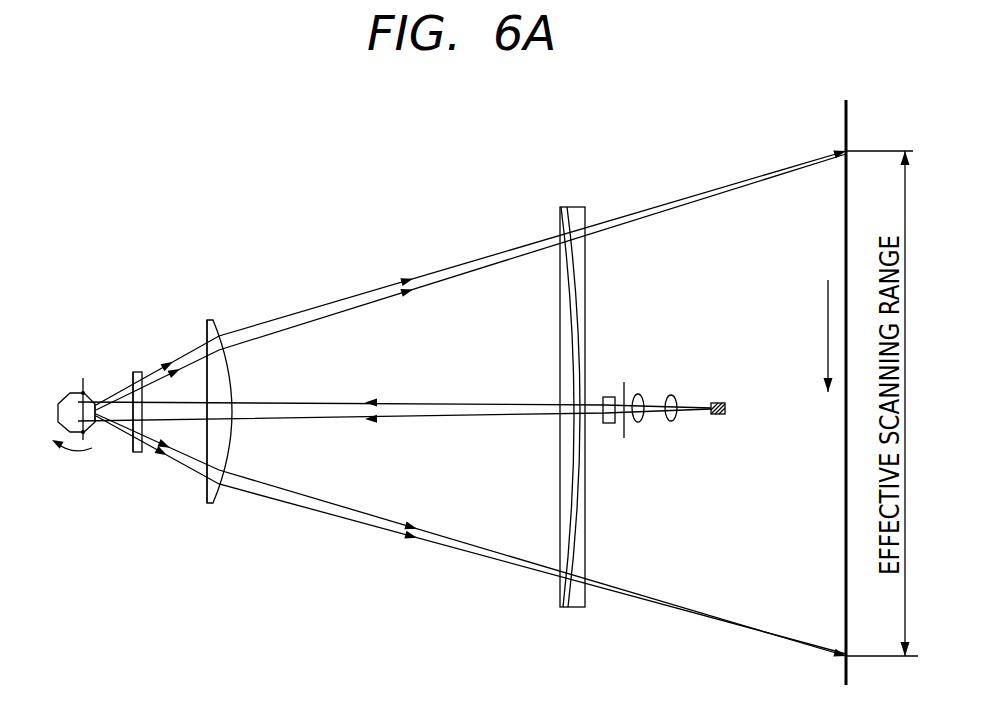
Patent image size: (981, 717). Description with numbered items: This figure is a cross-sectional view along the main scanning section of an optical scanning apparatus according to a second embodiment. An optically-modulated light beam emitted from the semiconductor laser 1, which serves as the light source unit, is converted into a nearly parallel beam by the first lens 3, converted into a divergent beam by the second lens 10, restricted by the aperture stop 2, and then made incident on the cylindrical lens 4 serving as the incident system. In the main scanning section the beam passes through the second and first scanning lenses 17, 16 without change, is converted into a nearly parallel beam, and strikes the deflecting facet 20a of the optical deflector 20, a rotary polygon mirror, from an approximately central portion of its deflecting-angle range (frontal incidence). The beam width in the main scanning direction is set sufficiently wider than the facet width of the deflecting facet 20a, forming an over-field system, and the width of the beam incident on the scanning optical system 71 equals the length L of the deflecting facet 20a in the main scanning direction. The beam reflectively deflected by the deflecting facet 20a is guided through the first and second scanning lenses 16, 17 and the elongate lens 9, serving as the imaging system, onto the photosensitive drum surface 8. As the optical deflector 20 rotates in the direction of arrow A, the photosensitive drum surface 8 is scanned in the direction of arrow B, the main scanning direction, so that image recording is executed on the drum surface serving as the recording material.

The semiconductor laser 1 is at (718, 402).
The aperture stop 2 is at (624, 438).
The first lens 3 is at (671, 421).
The cylindrical lens 4 is at (609, 396).
The photosensitive drum surface 8 is at (848, 121).
The elongate lens 9 is at (573, 206).
The second lens 10 is at (638, 394).
The first scanning lens 16 is at (137, 372).
The second scanning lens 17 is at (210, 318).
The optical deflector 20 is at (72, 394).
The deflecting facet 20a is at (95, 421).
The scanning optical system 71 is at (214, 238).
The length of the deflecting facet L is at (60, 406).
The rotation direction of the optical deflector A is at (70, 459).
The main scanning direction B is at (828, 358).